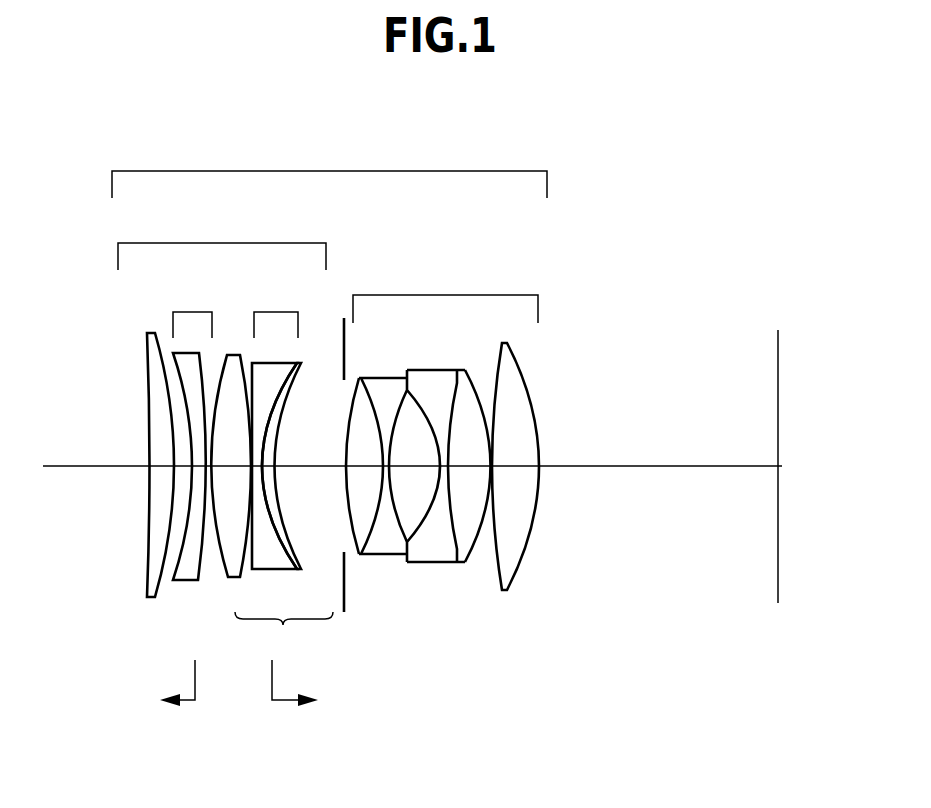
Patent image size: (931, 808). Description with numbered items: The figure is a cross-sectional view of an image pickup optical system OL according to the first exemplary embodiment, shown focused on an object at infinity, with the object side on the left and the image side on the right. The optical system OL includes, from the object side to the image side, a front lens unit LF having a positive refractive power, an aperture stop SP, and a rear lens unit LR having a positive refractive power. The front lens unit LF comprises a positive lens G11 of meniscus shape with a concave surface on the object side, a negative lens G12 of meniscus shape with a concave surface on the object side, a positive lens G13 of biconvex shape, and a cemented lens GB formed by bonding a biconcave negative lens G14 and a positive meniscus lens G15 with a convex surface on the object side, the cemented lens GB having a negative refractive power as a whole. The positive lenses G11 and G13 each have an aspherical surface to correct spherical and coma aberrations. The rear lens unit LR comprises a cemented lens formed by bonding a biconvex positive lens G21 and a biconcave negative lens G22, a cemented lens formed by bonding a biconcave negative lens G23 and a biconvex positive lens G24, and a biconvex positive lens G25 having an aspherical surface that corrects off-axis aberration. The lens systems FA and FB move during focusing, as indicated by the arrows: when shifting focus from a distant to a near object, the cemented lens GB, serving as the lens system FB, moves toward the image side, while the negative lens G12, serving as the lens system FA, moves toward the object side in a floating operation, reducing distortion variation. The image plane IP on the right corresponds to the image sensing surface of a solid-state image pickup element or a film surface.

The optical system OL is at (329, 173).
The front lens unit LF is at (222, 245).
The rear lens unit LR is at (445, 298).
The lens system FA is at (192, 313).
The lens system FB is at (276, 313).
The cemented lens GB is at (284, 634).
The positive lens G11 is at (150, 572).
The negative lens G12 is at (188, 580).
The positive lens G13 is at (235, 575).
The negative lens G14 is at (262, 571).
The positive lens G15 is at (298, 571).
The aperture stop SP is at (344, 612).
The positive lens G21 is at (363, 556).
The negative lens G22 is at (392, 556).
The negative lens G23 is at (432, 563).
The positive lens G24 is at (468, 542).
The positive lens G25 is at (515, 552).
The image plane IP is at (778, 362).